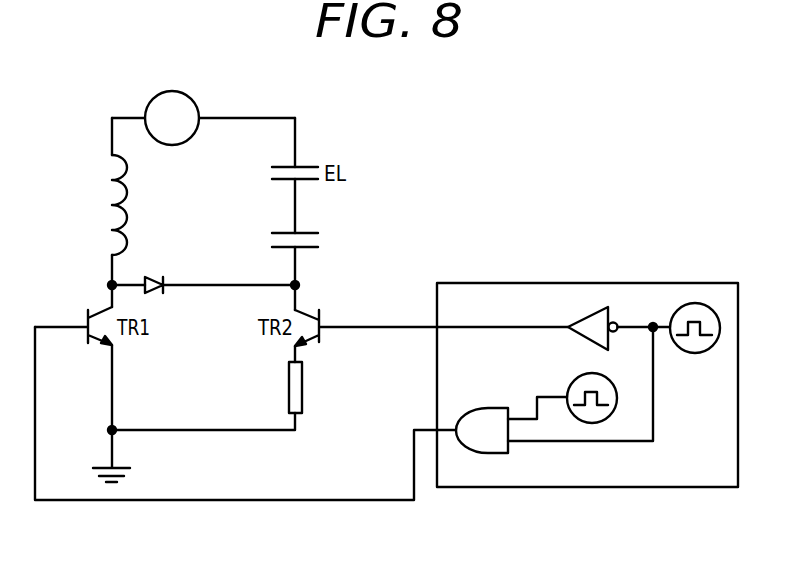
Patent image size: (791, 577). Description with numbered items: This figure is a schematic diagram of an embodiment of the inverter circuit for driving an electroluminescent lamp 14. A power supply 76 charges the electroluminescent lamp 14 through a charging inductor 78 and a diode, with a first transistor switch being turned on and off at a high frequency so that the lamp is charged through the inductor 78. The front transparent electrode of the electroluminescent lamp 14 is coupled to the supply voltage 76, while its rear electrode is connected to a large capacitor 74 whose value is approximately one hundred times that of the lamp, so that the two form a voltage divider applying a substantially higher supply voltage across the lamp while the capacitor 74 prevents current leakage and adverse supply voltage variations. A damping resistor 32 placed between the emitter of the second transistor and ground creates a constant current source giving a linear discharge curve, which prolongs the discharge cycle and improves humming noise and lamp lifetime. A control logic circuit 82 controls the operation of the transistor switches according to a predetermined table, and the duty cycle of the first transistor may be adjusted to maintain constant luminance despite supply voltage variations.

The power supply 76 is at (172, 91).
The charging inductor 78 is at (110, 203).
The electroluminescent lamp 14 is at (268, 168).
The capacitor 74 is at (268, 235).
The damping resistor 32 is at (304, 386).
The control logic circuit 82 is at (584, 284).